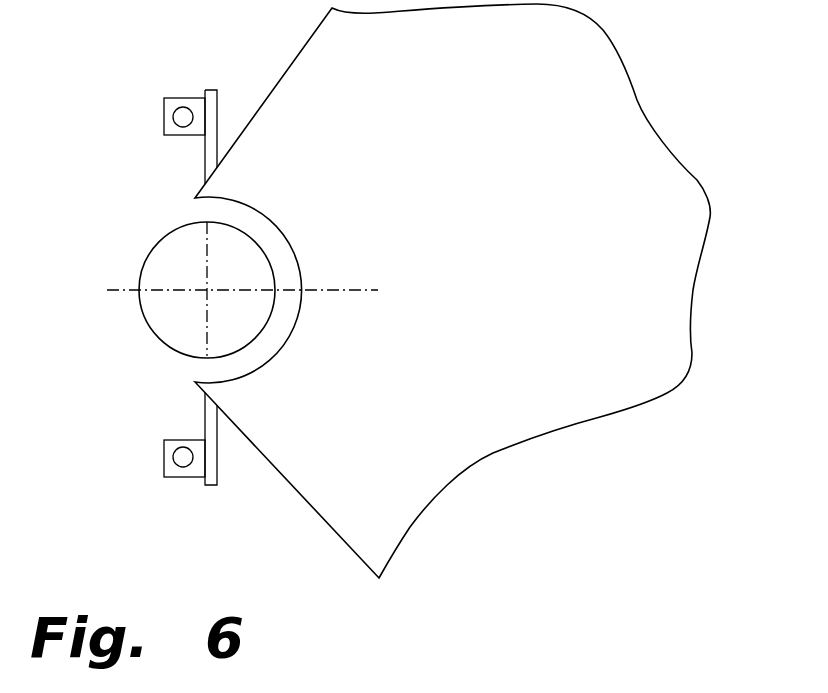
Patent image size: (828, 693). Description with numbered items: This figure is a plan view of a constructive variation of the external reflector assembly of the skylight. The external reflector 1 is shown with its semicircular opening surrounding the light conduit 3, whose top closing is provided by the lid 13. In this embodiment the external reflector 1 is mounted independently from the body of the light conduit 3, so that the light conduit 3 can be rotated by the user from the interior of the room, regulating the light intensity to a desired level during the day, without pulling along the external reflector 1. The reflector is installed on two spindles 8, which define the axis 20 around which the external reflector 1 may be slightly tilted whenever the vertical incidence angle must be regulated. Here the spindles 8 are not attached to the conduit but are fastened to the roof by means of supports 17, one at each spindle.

The external reflector 1 is at (693, 298).
The light conduit 3 is at (129, 312).
The lid 13 is at (152, 250).
The axis 20 is at (200, 338).
The spindles 8 is at (205, 167).
The supports 17 is at (164, 457).